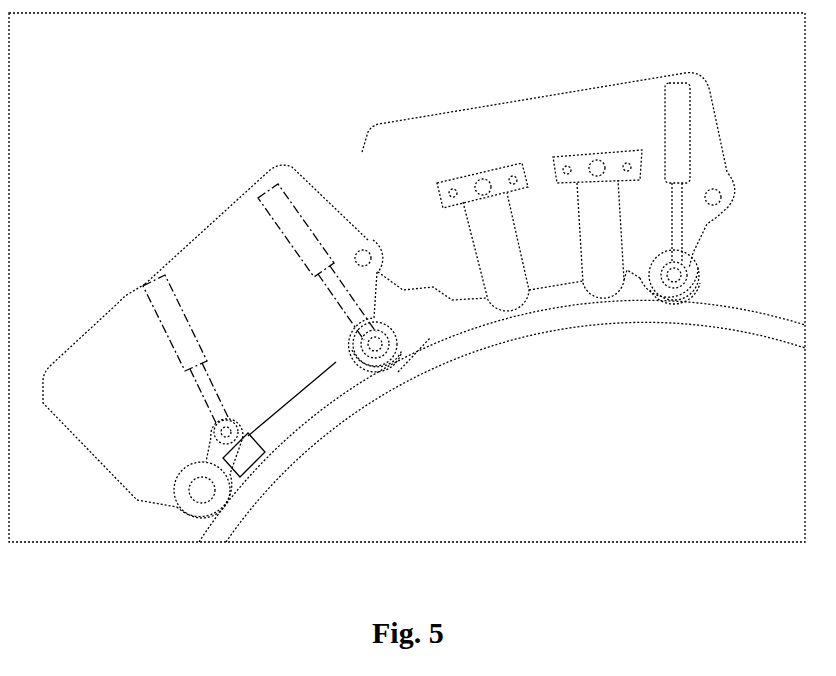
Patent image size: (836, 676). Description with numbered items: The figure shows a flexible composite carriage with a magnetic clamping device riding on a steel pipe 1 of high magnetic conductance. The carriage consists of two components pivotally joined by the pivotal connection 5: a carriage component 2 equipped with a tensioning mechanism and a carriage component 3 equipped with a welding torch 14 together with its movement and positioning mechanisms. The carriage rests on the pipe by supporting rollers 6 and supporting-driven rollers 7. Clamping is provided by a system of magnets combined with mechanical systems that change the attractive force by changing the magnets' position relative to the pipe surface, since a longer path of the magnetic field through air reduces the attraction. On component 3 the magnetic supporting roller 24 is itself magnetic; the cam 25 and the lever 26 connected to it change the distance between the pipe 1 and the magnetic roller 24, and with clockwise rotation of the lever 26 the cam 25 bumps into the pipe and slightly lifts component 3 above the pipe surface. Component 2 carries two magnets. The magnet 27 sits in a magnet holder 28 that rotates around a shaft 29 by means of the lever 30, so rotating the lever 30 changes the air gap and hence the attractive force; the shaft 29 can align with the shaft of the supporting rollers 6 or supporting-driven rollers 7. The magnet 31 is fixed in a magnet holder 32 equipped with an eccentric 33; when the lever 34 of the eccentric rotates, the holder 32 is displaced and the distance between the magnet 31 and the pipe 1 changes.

The pipe 1 is at (324, 451).
The carriage component equipped with tensioning mechanism 2 is at (184, 255).
The carriage component equipped with welding torch and its movement and positioning 3 is at (513, 93).
The pivotal connection of the flexible composite carriage components 5 is at (356, 238).
The supporting rollers 6 is at (176, 518).
The supporting-driven rollers 7 is at (420, 376).
The welding torch 14 is at (506, 290).
The magnetic supporting roller 24 is at (711, 255).
The cam 25 is at (725, 269).
The lever 26 is at (688, 125).
The magnet 27 is at (392, 378).
The holder of magnet 28 is at (355, 355).
The shaft 29 is at (360, 334).
The lever 30 is at (278, 222).
The magnet 31 is at (263, 470).
The holder of magnet 32 is at (202, 443).
The eccentric 33 is at (207, 424).
The lever of eccentric 34 is at (136, 314).